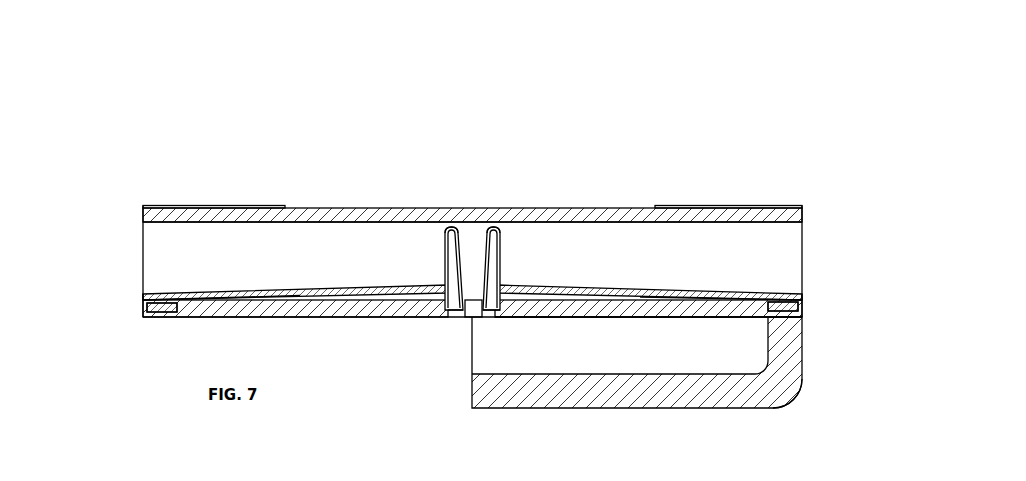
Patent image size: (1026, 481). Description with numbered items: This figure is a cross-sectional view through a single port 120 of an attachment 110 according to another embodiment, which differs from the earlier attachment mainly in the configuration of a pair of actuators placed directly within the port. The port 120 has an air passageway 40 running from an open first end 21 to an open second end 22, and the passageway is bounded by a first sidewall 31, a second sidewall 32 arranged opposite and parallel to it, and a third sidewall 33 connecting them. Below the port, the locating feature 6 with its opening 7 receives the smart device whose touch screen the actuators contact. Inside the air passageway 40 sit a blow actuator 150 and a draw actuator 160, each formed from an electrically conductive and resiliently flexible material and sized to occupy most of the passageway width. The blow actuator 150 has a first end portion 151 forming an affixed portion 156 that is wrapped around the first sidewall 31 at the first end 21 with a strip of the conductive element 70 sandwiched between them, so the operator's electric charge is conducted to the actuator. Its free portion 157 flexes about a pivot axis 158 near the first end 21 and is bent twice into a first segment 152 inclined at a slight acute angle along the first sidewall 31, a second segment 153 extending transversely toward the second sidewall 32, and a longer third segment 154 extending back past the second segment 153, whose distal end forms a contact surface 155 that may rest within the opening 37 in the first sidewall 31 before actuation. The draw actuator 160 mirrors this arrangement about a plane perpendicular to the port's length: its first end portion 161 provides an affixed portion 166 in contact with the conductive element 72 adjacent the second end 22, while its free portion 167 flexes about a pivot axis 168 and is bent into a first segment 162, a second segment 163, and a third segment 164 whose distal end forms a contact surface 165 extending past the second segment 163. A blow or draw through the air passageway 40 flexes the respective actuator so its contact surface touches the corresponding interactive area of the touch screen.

The attachment 110 is at (217, 95).
The port 120 is at (792, 180).
The first end 21 is at (143, 247).
The second end 22 is at (803, 250).
The second sidewall 32 is at (357, 208).
The third sidewall 33 is at (318, 238).
The first sidewall 31 is at (364, 319).
The opening 37 is at (468, 320).
The air passageway 40 is at (158, 271).
The conductive element 70 is at (163, 305).
The conductive element 72 is at (786, 303).
The blow actuator 150 is at (313, 306).
The first end portion 151 is at (147, 308).
The first segment 152 is at (270, 291).
The second segment 153 is at (445, 250).
The third segment 154 is at (467, 245).
The contact surface 155 is at (455, 311).
The affixed portion 156 is at (162, 307).
The free portion 157 is at (235, 301).
The pivot axis 158 is at (145, 296).
The draw actuator 160 is at (630, 305).
The first end portion 161 is at (802, 308).
The first segment 162 is at (687, 292).
The second segment 163 is at (500, 250).
The third segment 164 is at (480, 245).
The contact surface 165 is at (484, 311).
The affixed portion 166 is at (783, 306).
The free portion 167 is at (705, 297).
The pivot axis 168 is at (802, 297).
The opening 7 is at (583, 367).
The locating feature 6 is at (802, 403).